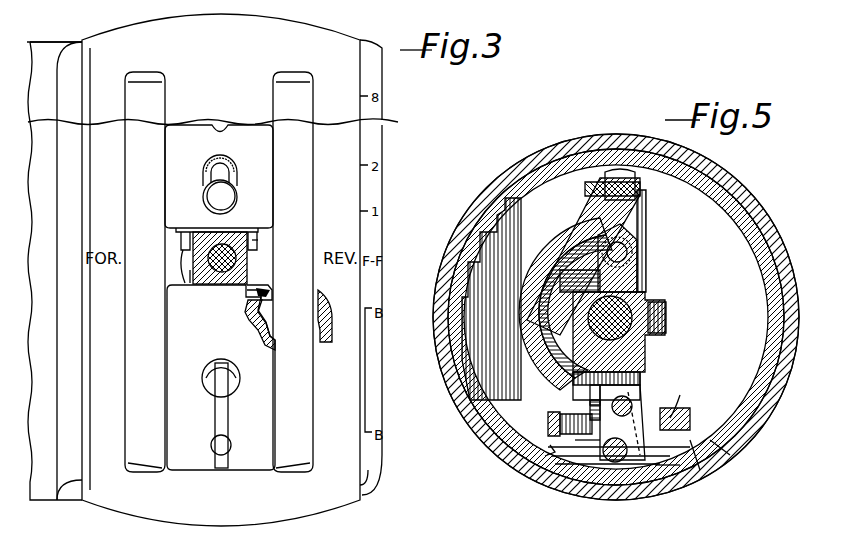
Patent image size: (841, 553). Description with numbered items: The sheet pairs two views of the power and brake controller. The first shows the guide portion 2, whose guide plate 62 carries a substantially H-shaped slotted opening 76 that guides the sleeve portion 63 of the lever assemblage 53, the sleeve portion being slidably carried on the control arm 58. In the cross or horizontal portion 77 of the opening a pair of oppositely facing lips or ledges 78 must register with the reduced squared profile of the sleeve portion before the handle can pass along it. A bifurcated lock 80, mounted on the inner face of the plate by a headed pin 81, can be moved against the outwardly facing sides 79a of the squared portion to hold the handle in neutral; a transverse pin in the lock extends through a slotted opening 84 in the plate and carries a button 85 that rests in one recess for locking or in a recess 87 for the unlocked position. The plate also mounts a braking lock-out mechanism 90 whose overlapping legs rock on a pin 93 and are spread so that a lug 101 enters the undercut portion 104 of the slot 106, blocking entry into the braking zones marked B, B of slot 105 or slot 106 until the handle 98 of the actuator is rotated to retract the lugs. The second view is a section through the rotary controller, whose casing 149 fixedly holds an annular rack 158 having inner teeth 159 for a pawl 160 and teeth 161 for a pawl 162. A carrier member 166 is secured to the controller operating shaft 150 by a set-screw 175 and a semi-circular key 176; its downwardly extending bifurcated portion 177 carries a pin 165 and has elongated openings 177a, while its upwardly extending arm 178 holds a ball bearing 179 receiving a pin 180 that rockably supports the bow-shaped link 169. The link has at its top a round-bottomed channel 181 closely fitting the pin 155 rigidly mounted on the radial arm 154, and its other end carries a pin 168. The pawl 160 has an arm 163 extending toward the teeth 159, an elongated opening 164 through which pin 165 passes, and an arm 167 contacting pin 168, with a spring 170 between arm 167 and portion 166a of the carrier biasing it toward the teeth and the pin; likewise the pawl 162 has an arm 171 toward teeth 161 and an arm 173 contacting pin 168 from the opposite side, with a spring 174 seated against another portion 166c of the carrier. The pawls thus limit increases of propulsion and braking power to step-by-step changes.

In FIG. 3, the guide portion 2 is at (70, 32).
In FIG. 3, the guide plate 62 is at (350, 36).
In FIG. 3, the H-shaped slotted opening 76 is at (268, 80).
In FIG. 3, the headed pin 81 is at (224, 124).
In FIG. 3, the recess 87 is at (230, 160).
In FIG. 3, the slotted opening 84 is at (229, 170).
In FIG. 3, the button 85 is at (229, 198).
In FIG. 3, the bifurcated lock 80 is at (189, 235).
In FIG. 3, the lever assemblage 53 is at (260, 238).
In FIG. 3, the control arm 58 is at (256, 250).
In FIG. 3, the outwardly facing sides 79a is at (249, 270).
In FIG. 3, the sleeve portion 63 is at (222, 284).
In FIG. 3, the lips or ledges 78 is at (190, 282).
In FIG. 3, the horizontal portion 77 is at (190, 283).
In FIG. 3, the slot 105 is at (142, 350).
In FIG. 3, the lug 101 is at (264, 294).
In FIG. 3, the undercut portion 104 is at (268, 330).
In FIG. 3, the slot 106 is at (305, 405).
In FIG. 3, the braking lock-out mechanism 90 is at (231, 355).
In FIG. 3, the handle 98 is at (220, 412).
In FIG. 3, the pin 93 is at (231, 450).
In FIG. 5, the casing 149 is at (508, 166).
In FIG. 5, the teeth 161 is at (775, 325).
In FIG. 5, the teeth 159 is at (478, 247).
In FIG. 5, the semi-circular key 176 is at (690, 345).
In FIG. 5, the link 169 is at (580, 216).
In FIG. 5, the round-bottomed channel 181 is at (588, 182).
In FIG. 5, the pin 155 is at (638, 188).
In FIG. 5, the pin 180 is at (646, 228).
In FIG. 5, the arm 154 is at (630, 218).
In FIG. 5, the ball bearing 179 is at (634, 250).
In FIG. 5, the upwardly extending arm 178 is at (632, 265).
In FIG. 5, the controller operating shaft 150 is at (660, 295).
In FIG. 5, the set-screw 175 is at (664, 318).
In FIG. 5, the downwardly extending portion 177 is at (650, 350).
In FIG. 5, the carrier member 166 is at (645, 366).
In FIG. 5, the pin 168 is at (640, 384).
In FIG. 5, the arm 167 is at (697, 396).
In FIG. 5, the spring 170 is at (633, 404).
In FIG. 5, the portion of carrier member 166a is at (682, 428).
In FIG. 5, the elongated openings 177a is at (594, 388).
In FIG. 5, the arm 173 is at (592, 406).
In FIG. 5, the portion of carrier member 166c is at (552, 414).
In FIG. 5, the spring 174 is at (552, 420).
In FIG. 5, the opening 164 is at (624, 468).
In FIG. 5, the arm 163 is at (555, 450).
In FIG. 5, the annular portion or rack 158 is at (568, 462).
In FIG. 5, the pawl 160 is at (590, 470).
In FIG. 5, the pin 165 is at (668, 490).
In FIG. 5, the pawl 162 is at (690, 472).
In FIG. 5, the arm 171 is at (718, 458).